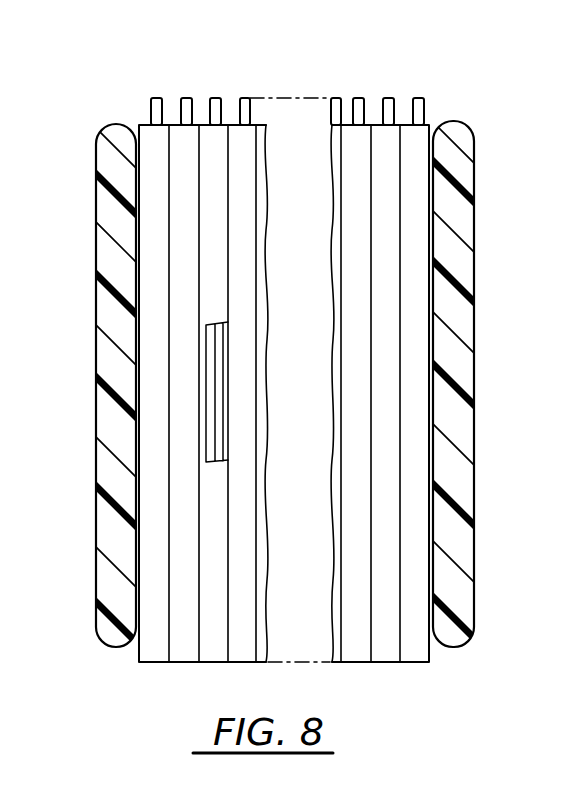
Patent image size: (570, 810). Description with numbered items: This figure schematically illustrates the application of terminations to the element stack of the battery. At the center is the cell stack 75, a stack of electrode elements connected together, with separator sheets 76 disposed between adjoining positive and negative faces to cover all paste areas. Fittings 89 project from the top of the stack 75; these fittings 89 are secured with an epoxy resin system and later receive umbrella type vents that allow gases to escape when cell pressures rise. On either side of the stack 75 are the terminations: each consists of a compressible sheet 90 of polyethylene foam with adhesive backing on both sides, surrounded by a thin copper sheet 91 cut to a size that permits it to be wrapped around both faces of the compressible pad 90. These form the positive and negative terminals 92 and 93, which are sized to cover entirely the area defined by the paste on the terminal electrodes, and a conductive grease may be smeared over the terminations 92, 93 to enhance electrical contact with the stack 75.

The plate stack 75 is at (384, 668).
The separator sheets 76 is at (206, 428).
The fittings 89 is at (209, 100).
The compressible sheet 90 is at (112, 250).
The copper sheet 91 is at (97, 196).
The positive terminal 92 is at (74, 386).
The negative terminal 93 is at (474, 593).